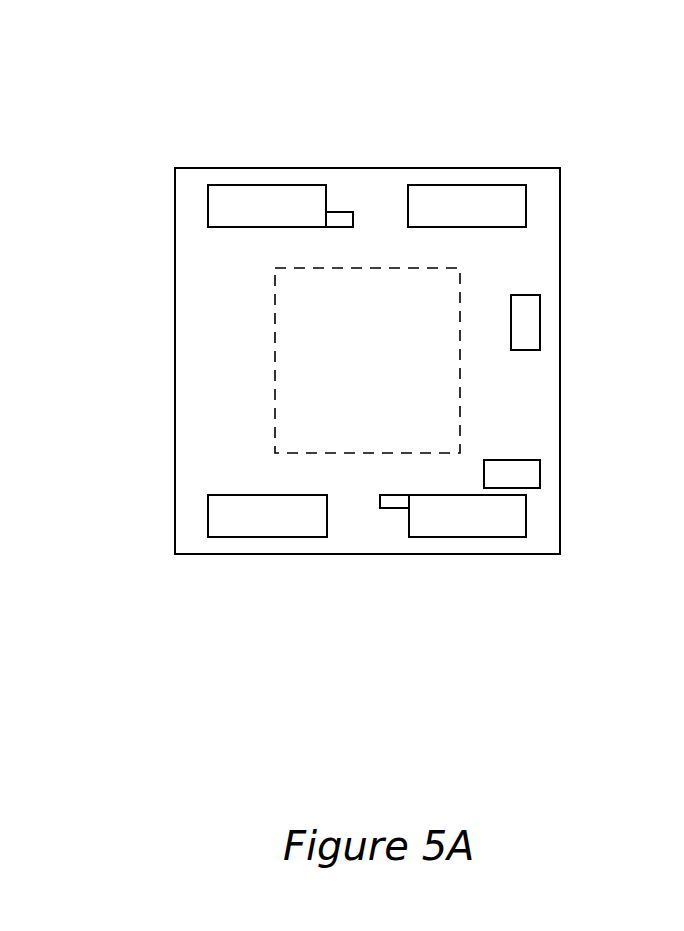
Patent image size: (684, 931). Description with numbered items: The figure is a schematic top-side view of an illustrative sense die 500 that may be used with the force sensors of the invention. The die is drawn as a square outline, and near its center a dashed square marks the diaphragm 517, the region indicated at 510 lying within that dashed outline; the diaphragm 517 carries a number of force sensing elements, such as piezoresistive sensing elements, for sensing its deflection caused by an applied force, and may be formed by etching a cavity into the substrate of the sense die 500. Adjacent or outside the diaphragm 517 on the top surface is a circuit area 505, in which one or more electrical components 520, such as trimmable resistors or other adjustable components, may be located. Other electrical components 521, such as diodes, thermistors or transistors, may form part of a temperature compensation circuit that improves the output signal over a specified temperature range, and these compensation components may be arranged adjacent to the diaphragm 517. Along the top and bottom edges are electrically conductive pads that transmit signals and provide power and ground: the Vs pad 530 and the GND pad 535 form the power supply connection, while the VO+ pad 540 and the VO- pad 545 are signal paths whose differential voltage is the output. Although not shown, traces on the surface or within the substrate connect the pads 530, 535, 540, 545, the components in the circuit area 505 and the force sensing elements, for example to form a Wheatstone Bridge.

The sense die 500 is at (130, 88).
The circuit area 505 is at (200, 262).
The sensor die region 510 is at (298, 324).
The diaphragm 517 is at (274, 400).
The electrical components 520 is at (530, 324).
The other electrical components 521 is at (530, 474).
The Vs pad 530 is at (472, 190).
The GND pad 535 is at (268, 532).
The VO+ pad 540 is at (268, 190).
The VO- pad 545 is at (472, 532).